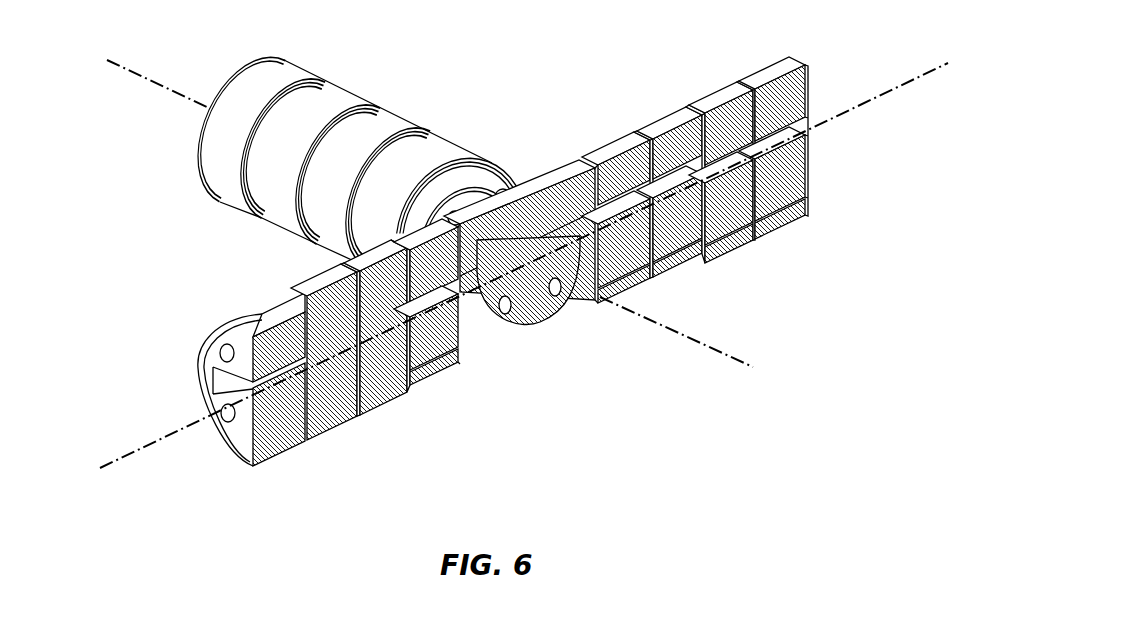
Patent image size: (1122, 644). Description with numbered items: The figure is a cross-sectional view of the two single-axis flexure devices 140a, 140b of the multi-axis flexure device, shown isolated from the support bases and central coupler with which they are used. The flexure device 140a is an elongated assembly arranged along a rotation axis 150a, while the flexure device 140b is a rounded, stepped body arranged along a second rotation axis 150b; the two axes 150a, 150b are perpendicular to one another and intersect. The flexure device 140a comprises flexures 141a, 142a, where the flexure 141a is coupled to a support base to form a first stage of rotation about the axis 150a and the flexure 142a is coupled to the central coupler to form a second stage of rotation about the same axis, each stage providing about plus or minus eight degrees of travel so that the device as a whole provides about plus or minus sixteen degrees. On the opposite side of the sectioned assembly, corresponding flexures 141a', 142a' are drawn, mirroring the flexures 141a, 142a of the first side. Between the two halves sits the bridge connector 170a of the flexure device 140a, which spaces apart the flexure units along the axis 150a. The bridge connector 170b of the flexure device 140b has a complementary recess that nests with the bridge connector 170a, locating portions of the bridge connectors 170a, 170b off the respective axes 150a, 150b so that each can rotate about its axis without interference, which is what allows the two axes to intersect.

The flexure device 140a is at (668, 88).
The flexure device 140b is at (334, 50).
The flexure 141a is at (748, 166).
The end block (second half) 141a' is at (279, 378).
The flexure 142a is at (648, 212).
The intermediate block (second half) 142a' is at (403, 331).
The axis 150a is at (140, 447).
The axis 150b is at (693, 340).
The bridge connector 170a is at (532, 197).
The bridge connector 170b is at (538, 313).